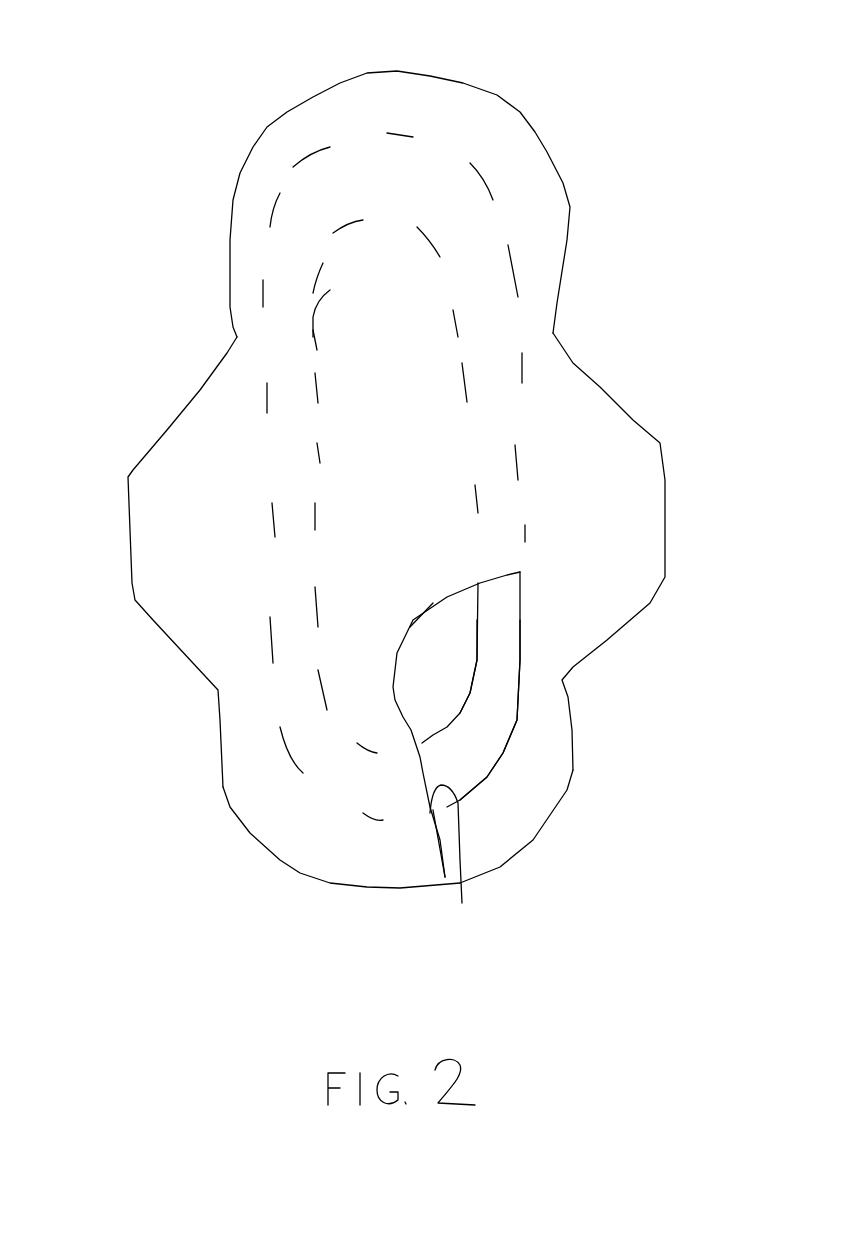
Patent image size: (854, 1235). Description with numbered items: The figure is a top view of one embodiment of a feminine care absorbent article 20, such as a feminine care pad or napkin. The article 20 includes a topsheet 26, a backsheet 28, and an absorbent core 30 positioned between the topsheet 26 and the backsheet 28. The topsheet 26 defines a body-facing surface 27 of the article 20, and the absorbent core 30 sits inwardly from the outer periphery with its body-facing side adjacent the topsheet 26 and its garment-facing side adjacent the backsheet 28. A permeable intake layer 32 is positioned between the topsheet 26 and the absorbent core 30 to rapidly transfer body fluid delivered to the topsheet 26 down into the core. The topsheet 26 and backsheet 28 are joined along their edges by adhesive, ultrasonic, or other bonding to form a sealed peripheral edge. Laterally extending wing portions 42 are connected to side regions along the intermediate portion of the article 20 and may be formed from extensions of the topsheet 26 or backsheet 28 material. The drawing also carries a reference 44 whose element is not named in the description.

The feminine care absorbent article 20 is at (458, 175).
The wing portions 42 is at (403, 560).
The body-facing surface 27 is at (341, 869).
The rear end region 44 is at (537, 826).
The backsheet 28 is at (468, 724).
The absorbent core 30 is at (490, 710).
The intake layer 32 is at (450, 663).
The topsheet 26 is at (468, 859).